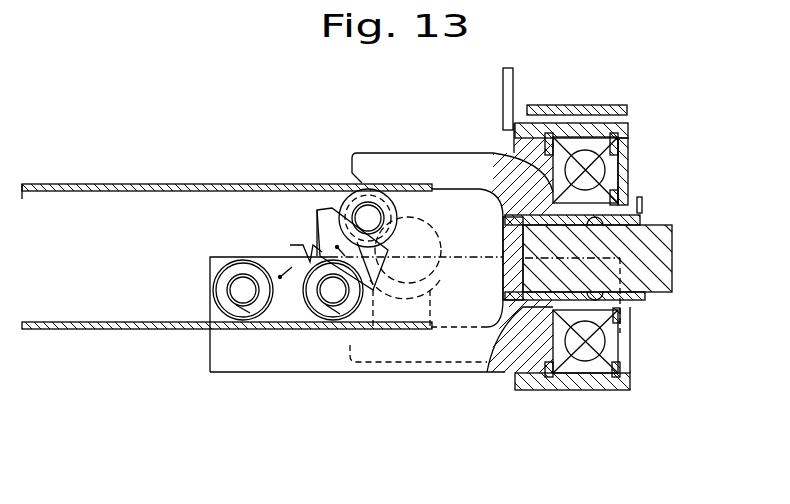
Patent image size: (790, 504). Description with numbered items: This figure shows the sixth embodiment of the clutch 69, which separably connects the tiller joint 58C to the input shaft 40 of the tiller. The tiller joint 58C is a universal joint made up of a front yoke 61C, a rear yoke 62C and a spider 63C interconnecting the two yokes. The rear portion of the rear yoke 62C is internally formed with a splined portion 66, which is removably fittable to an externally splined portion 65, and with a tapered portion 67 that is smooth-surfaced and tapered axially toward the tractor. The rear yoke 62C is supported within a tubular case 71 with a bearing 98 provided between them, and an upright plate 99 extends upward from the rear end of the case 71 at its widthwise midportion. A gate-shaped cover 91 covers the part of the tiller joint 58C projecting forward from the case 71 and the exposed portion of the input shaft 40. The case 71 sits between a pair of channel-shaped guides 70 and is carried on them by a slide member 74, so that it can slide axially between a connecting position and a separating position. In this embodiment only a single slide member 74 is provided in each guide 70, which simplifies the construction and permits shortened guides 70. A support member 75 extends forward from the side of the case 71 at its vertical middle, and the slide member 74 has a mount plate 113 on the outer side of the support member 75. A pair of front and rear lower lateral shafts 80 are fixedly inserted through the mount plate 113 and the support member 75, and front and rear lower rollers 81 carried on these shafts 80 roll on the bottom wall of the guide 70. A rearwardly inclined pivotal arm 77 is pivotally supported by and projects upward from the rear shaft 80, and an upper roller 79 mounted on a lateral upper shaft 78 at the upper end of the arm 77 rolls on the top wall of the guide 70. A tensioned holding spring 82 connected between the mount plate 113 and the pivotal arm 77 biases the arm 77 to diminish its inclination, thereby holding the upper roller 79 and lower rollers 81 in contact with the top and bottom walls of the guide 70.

The input shaft 40 is at (655, 235).
The tiller joint 58C is at (447, 148).
The front yoke 61C is at (325, 222).
The rear yoke 62C is at (482, 165).
The spider 63C is at (420, 214).
The externally splined portion 65 is at (645, 302).
The splined portion 66 is at (478, 310).
The tapered portion 67 is at (638, 207).
The clutch 69 is at (372, 377).
The guide 70 is at (248, 183).
The tubular case 71 is at (583, 382).
The slide member 74 is at (278, 258).
The support member 75 is at (222, 352).
The pivotal arm 77 is at (373, 265).
The upper shaft 78 is at (368, 216).
The upper roller 79 is at (385, 212).
The lower lateral shafts 80 is at (237, 295).
The lower rollers 81 is at (250, 313).
The holding spring 82 is at (337, 247).
The gate-shaped cover 91 is at (578, 105).
The bearing 98 is at (600, 343).
The upright plate 99 is at (513, 100).
The mount plate 113 is at (292, 305).